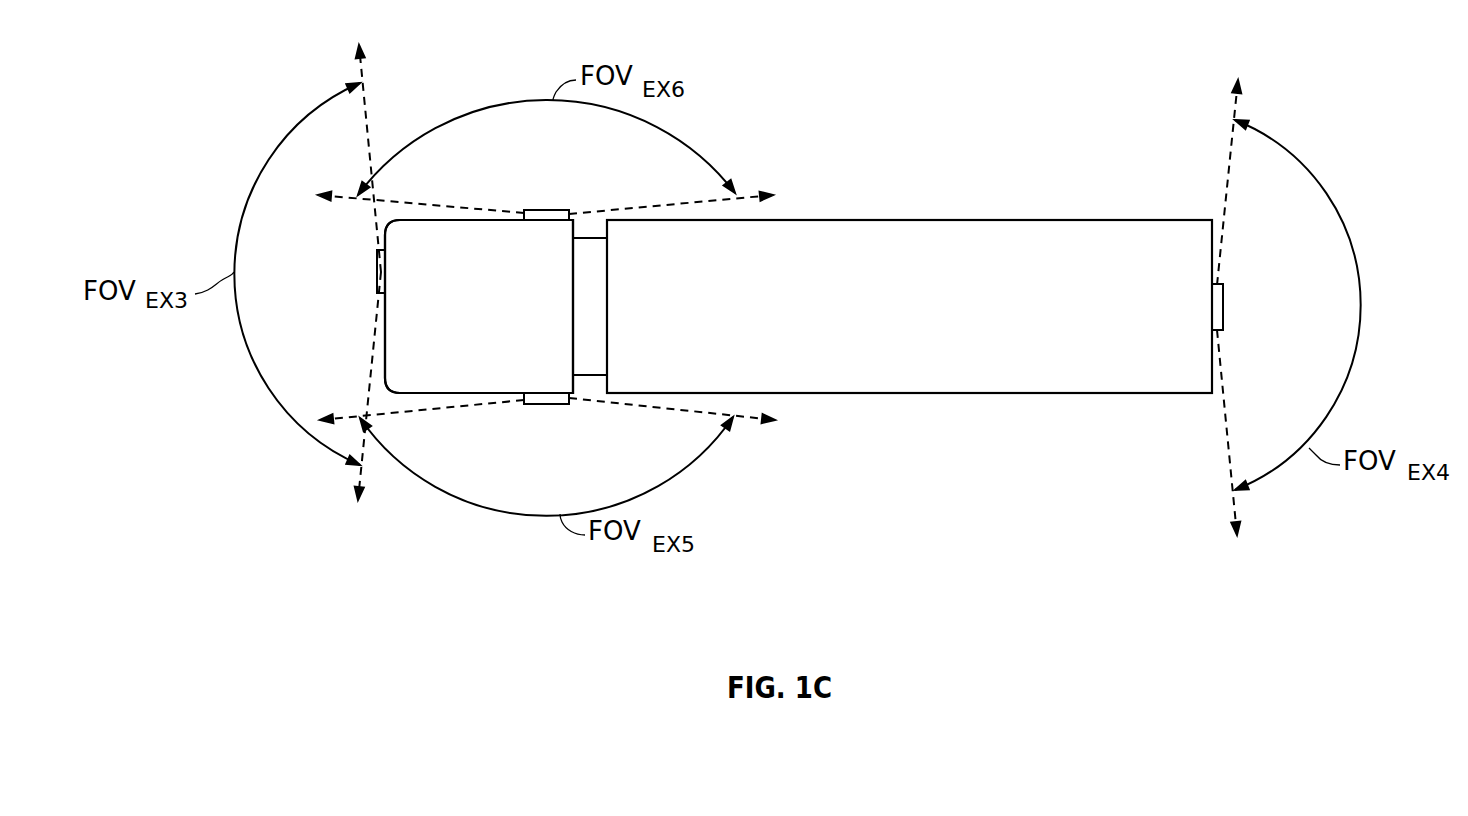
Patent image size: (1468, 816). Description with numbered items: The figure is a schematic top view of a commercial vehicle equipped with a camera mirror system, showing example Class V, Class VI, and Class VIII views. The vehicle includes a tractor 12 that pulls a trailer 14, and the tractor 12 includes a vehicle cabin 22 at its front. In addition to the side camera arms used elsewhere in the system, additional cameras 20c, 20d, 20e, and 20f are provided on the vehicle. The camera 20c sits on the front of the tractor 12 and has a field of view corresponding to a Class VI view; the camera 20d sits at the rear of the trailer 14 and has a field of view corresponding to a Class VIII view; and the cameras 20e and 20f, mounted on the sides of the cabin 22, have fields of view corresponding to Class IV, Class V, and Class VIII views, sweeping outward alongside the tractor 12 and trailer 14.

The tractor 12 is at (385, 358).
The trailer 14 is at (1122, 393).
The vehicle cabin 22 is at (486, 323).
The additional camera 20c is at (377, 272).
The additional camera 20d is at (1218, 304).
The additional camera 20e is at (553, 404).
The additional camera 20f is at (547, 212).